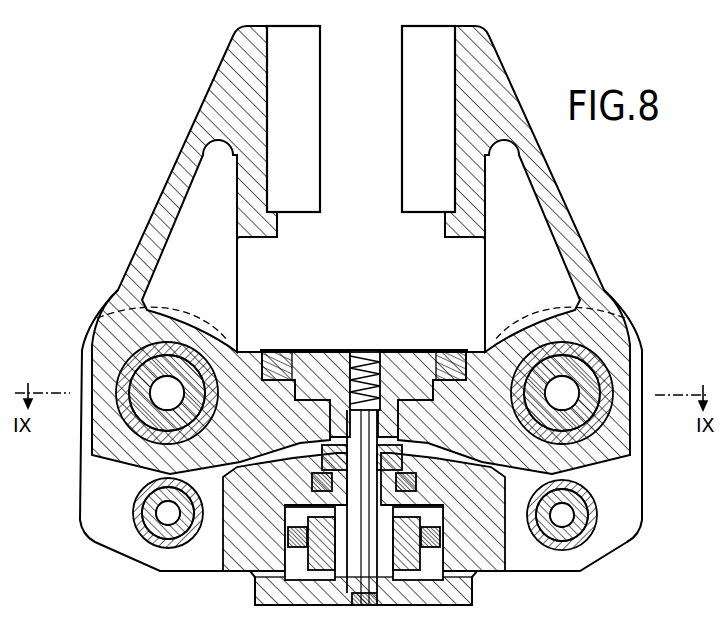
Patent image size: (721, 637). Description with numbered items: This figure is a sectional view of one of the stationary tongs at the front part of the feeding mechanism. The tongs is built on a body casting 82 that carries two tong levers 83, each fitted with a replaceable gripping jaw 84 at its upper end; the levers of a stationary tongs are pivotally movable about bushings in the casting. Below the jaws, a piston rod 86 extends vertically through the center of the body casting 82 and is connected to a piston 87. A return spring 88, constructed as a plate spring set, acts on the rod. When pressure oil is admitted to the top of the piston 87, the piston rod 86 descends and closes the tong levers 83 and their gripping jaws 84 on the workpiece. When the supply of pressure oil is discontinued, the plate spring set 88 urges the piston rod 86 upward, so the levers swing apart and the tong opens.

The body casting 82 is at (252, 532).
The tong levers 83 is at (228, 388).
The gripping jaws 84 is at (425, 103).
The piston rod 86 is at (393, 383).
The piston 87 is at (320, 533).
The return spring 88 is at (380, 600).